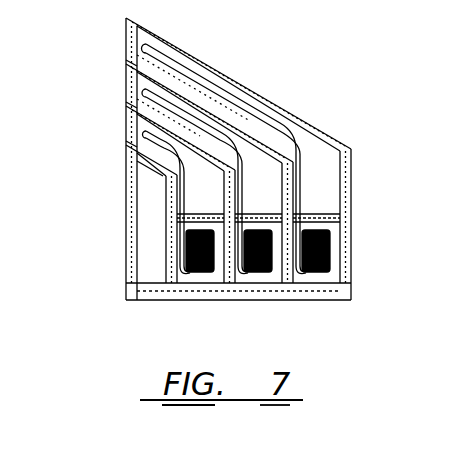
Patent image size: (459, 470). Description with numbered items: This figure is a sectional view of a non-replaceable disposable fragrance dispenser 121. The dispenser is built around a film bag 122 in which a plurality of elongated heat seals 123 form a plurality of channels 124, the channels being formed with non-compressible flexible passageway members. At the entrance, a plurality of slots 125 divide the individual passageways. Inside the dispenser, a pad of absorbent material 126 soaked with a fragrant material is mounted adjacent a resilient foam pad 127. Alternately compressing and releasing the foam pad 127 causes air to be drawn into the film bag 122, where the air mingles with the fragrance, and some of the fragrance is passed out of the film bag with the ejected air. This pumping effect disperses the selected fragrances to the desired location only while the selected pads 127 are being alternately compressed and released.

The non-replaceable disposable fragrance dispenser 121 is at (315, 120).
The film bag 122 is at (335, 141).
The elongated heat seals 123 is at (272, 112).
The channels 124 is at (186, 74).
The slots 125 is at (132, 60).
The pad of absorbent material 126 is at (312, 228).
The resilient foam pad 127 is at (333, 247).